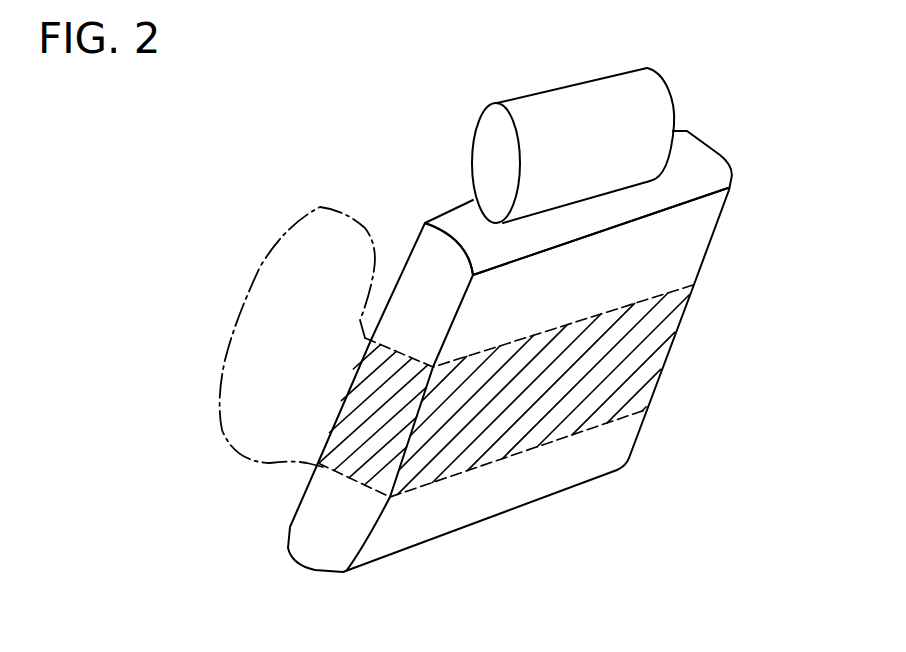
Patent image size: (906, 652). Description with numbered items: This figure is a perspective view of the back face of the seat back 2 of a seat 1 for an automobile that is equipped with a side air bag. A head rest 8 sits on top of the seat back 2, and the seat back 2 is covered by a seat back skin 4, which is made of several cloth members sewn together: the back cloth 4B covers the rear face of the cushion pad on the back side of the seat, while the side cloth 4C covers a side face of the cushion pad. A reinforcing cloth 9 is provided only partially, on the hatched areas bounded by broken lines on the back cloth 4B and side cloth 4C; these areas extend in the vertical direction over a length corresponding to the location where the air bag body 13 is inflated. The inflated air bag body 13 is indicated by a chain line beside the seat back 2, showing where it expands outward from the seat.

The seat 1 is at (265, 502).
The seat back 2 is at (698, 153).
The seat back skin 4 is at (730, 197).
The back cloth 4B is at (680, 253).
The side cloth 4C is at (420, 270).
The head rest 8 is at (650, 93).
The reinforcing cloth 9 is at (610, 403).
The air bag body 13 is at (223, 353).